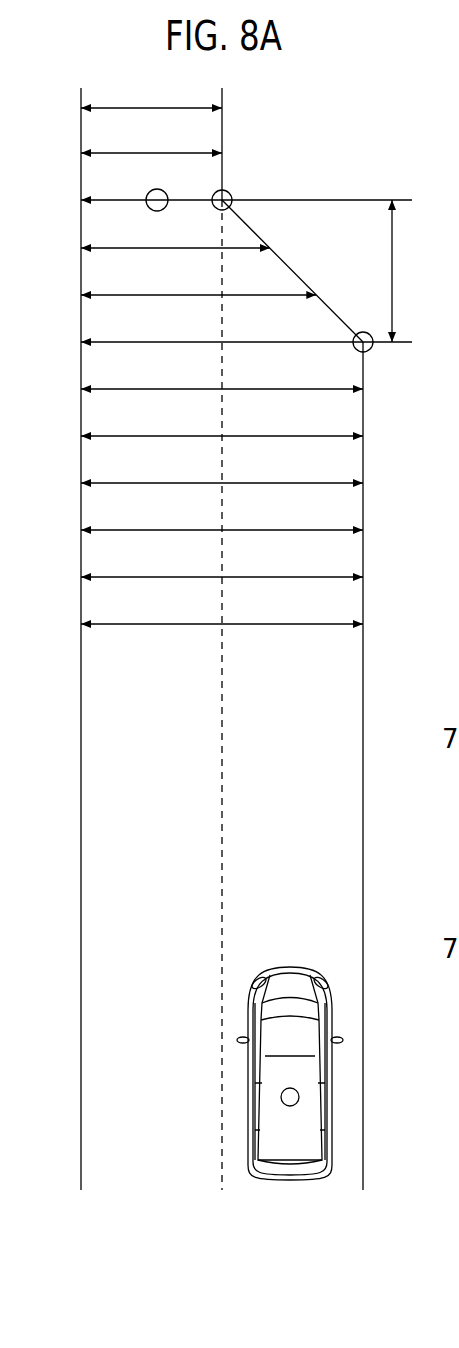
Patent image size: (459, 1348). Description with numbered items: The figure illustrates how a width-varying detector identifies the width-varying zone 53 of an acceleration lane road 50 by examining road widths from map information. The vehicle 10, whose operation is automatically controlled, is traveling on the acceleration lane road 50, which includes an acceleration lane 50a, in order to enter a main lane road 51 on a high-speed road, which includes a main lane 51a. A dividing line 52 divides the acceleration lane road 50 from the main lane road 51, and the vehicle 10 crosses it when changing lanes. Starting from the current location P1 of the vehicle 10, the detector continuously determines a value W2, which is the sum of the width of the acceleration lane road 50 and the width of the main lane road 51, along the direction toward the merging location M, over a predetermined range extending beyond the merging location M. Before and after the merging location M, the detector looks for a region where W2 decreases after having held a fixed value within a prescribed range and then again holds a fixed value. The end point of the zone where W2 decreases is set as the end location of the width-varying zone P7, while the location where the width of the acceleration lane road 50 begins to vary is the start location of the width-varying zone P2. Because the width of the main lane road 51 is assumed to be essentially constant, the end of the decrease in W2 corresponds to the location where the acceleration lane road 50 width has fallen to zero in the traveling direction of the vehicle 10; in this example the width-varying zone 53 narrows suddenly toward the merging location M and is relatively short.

The vehicle 10 is at (318, 1142).
The acceleration lane road 50 is at (345, 935).
The acceleration lane 50a is at (352, 845).
The main lane road 51 is at (100, 1008).
The main lane 51a is at (148, 845).
The dividing line 52 is at (222, 775).
The width-varying zone 53 is at (411, 271).
The sum of road widths W2 is at (246, 385).
The merging location M is at (170, 196).
The current location of the vehicle P1 is at (299, 1094).
The start location of the width-varying zone P2 is at (370, 350).
The end location of the width-varying zone P7 is at (231, 193).